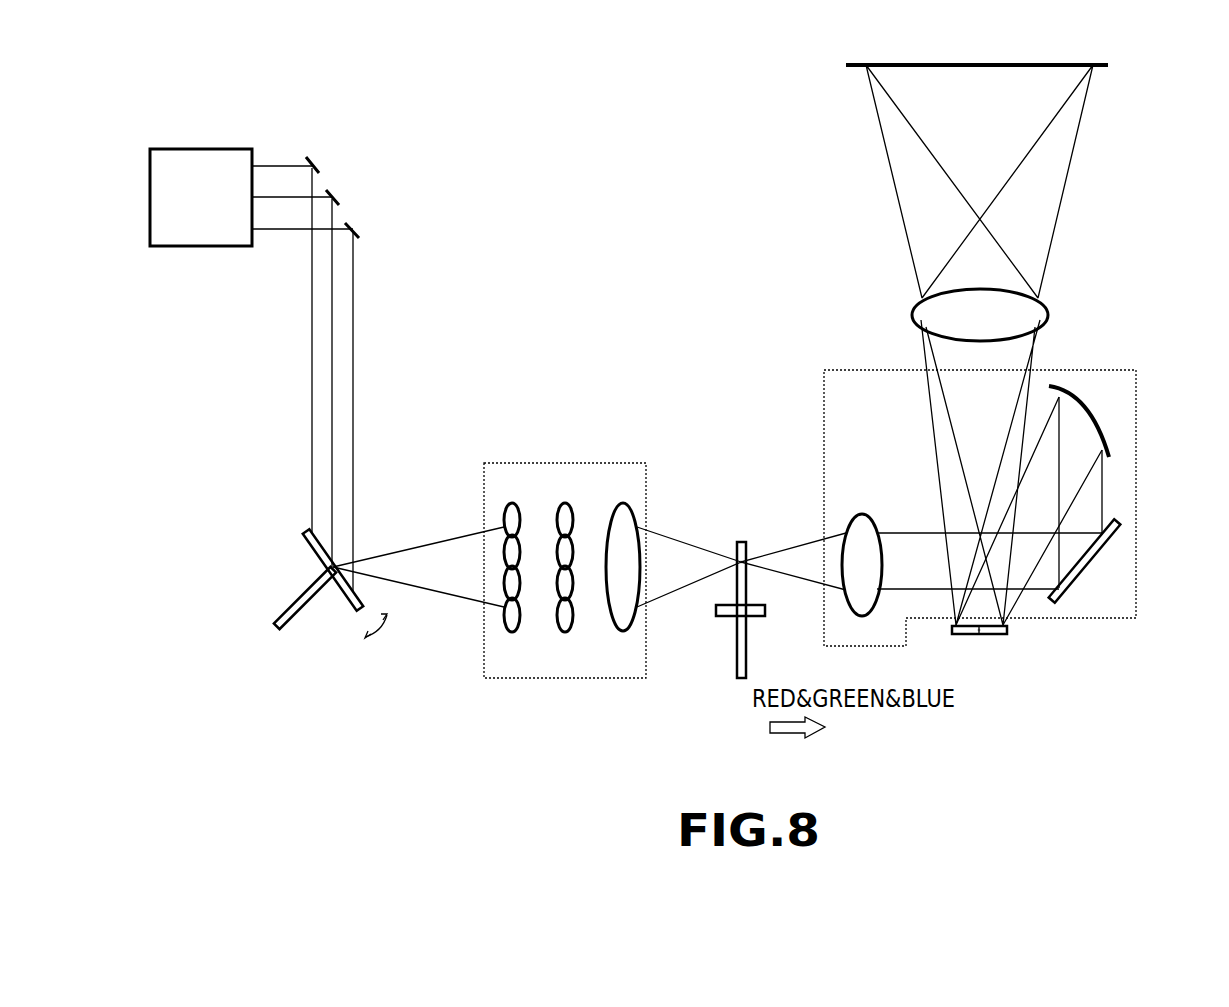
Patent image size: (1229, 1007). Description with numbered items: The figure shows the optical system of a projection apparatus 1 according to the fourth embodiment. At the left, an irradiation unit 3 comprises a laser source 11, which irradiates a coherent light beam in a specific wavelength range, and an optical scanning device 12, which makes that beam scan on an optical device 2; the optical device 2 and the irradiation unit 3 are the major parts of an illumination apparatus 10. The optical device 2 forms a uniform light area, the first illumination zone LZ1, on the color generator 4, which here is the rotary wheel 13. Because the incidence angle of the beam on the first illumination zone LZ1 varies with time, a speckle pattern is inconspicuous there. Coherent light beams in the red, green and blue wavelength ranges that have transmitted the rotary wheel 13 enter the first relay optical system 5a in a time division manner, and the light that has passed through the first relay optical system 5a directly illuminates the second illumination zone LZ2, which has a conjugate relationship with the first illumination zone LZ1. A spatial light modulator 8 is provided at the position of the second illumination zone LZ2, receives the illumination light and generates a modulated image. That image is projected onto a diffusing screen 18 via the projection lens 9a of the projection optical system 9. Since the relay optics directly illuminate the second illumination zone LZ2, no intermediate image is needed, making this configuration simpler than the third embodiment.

The projection apparatus 1 is at (226, 713).
The optical device 2 is at (556, 463).
The irradiation unit 3 is at (228, 342).
The color generator 4 is at (740, 680).
The rotary wheel 13 is at (740, 610).
The first relay optical system 5a is at (1137, 577).
The spatial light modulator 8 is at (1010, 631).
The projection optical system 9 is at (1044, 232).
The projection lens 9a is at (1030, 315).
The illumination apparatus 10 is at (394, 250).
The laser source 11 is at (178, 150).
The optical scanning device 12 is at (315, 556).
The diffusing screen 18 is at (863, 66).
The first illumination zone LZ1 is at (737, 557).
The second illumination zone LZ2 is at (978, 635).